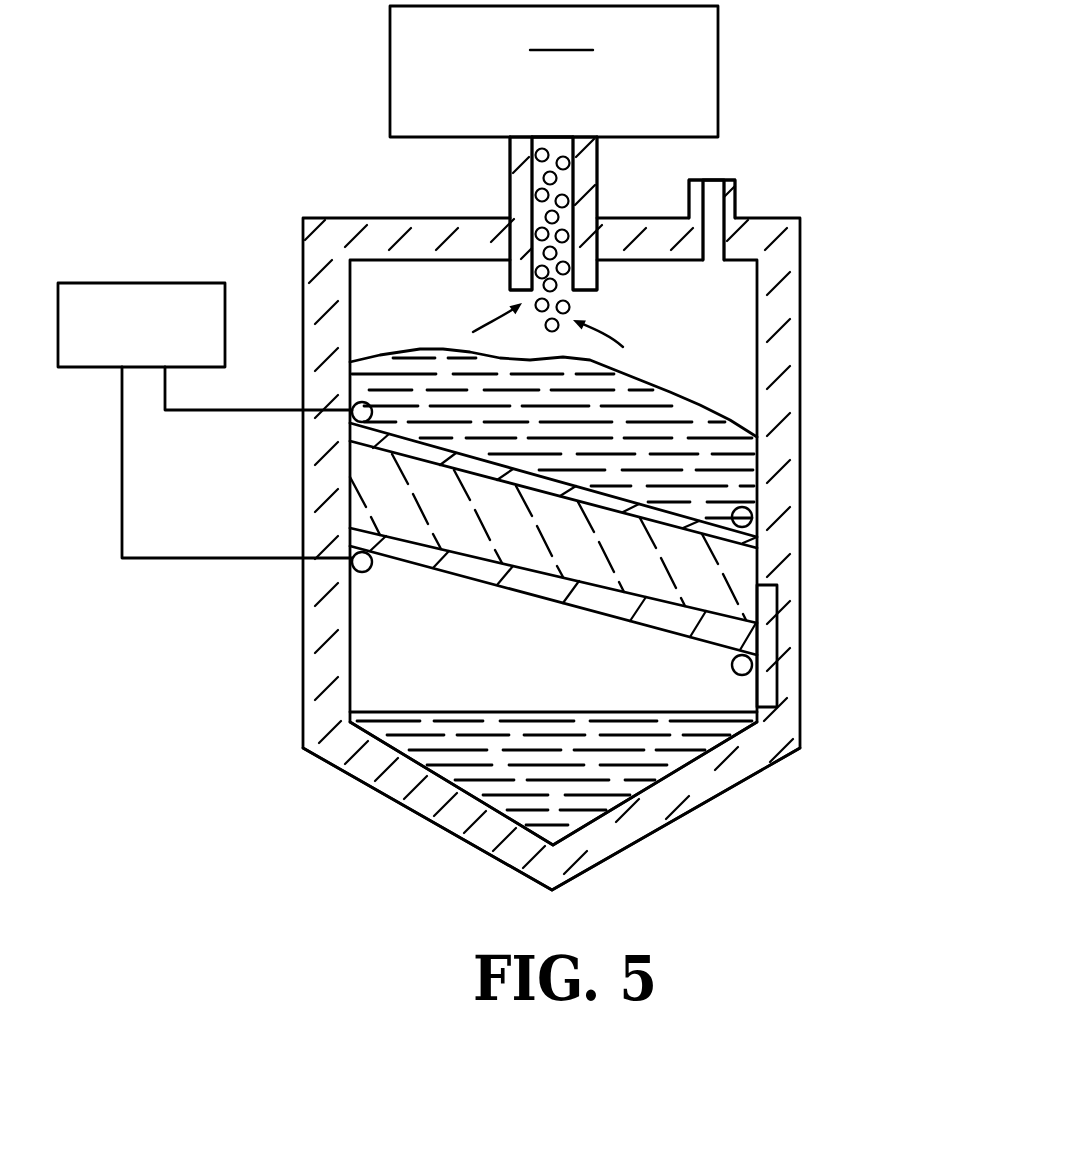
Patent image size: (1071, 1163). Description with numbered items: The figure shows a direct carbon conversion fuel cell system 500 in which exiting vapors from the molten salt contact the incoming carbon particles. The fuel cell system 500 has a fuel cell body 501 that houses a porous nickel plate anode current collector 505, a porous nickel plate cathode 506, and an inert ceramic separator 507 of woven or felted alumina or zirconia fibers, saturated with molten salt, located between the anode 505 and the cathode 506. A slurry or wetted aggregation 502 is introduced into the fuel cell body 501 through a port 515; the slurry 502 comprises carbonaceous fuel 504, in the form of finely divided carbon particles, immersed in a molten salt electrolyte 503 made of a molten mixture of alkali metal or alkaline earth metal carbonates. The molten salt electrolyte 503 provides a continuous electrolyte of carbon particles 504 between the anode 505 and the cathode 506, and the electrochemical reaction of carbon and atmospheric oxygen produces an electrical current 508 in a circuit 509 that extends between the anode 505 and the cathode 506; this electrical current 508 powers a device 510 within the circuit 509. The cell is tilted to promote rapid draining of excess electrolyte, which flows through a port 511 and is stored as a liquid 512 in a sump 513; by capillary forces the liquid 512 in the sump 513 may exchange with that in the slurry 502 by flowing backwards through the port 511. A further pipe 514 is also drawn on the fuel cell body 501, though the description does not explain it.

The fuel cell system 500 is at (786, 65).
The fuel cell body 501 is at (800, 368).
The slurry 502 is at (667, 390).
The molten salt electrolyte 503 is at (443, 350).
The carbonaceous fuel 504 is at (554, 71).
The anode 505 is at (362, 424).
The cathode 506 is at (352, 531).
The inert ceramic separator 507 is at (372, 477).
The electrical current 508 is at (208, 578).
The circuit 509 is at (165, 393).
The device 510 is at (130, 283).
The port 511 is at (770, 632).
The liquid 512 is at (543, 712).
The sump 513 is at (430, 825).
The gas outlet pipe 514 is at (717, 190).
The port 515 is at (510, 190).